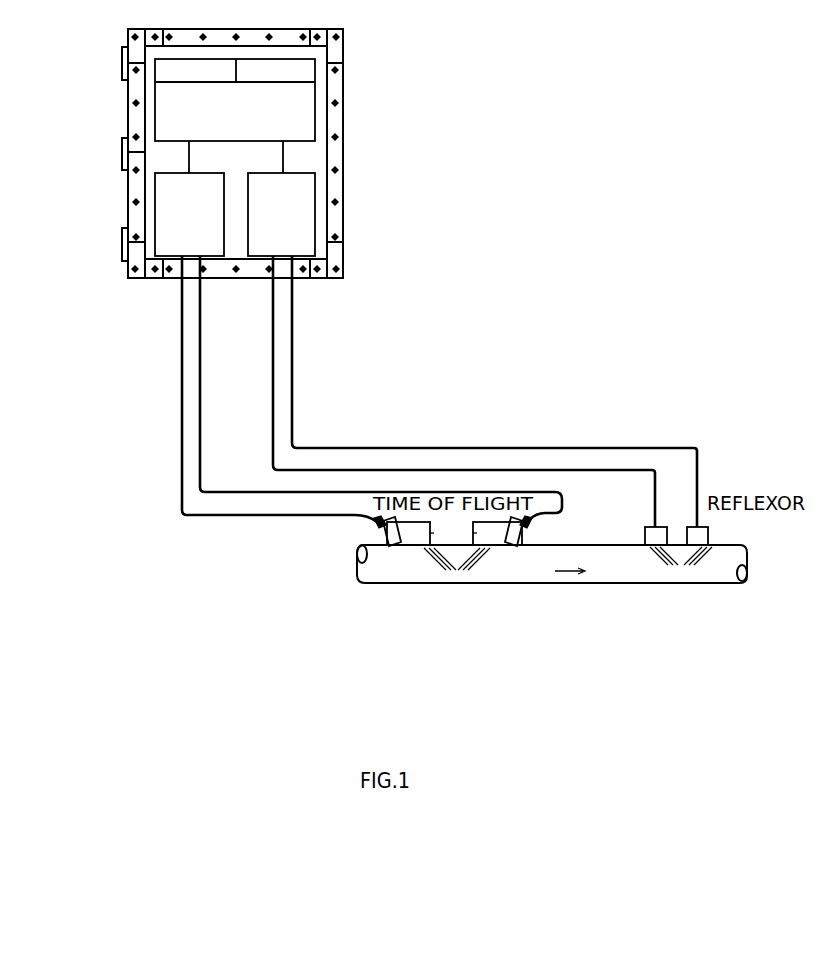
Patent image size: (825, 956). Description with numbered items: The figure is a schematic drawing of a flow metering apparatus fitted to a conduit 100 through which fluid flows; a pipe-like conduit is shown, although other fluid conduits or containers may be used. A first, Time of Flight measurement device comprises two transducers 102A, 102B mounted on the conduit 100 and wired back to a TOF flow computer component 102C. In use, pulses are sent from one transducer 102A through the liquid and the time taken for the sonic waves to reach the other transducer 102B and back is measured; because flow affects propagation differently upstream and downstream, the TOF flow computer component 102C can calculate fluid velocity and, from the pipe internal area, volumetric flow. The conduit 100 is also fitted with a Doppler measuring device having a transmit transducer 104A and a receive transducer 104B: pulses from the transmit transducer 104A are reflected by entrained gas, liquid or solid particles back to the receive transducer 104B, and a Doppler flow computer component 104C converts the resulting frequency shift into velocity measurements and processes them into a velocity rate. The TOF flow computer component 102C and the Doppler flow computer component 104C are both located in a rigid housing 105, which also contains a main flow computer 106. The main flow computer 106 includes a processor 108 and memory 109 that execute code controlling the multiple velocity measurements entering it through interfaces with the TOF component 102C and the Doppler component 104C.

The conduit 100 is at (632, 570).
The transducer 102A is at (385, 533).
The transducer 102B is at (527, 534).
The TOF flow computer component 102C is at (216, 250).
The transmit transducer 104A is at (655, 528).
The receive transducer 104B is at (702, 538).
The Doppler flow computer component 104C is at (312, 250).
The rigid housing 105 is at (340, 152).
The main flow computer 106 is at (298, 136).
The processor 108 is at (195, 72).
The memory 109 is at (275, 72).